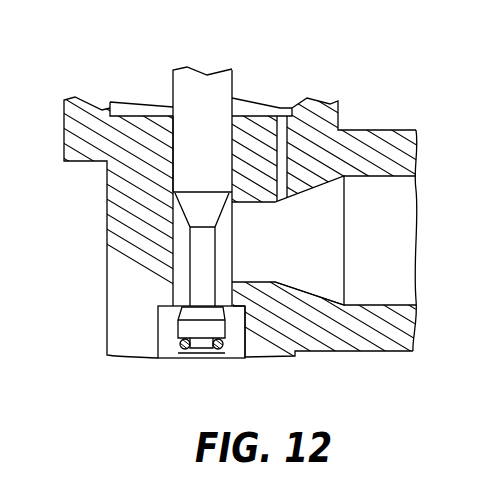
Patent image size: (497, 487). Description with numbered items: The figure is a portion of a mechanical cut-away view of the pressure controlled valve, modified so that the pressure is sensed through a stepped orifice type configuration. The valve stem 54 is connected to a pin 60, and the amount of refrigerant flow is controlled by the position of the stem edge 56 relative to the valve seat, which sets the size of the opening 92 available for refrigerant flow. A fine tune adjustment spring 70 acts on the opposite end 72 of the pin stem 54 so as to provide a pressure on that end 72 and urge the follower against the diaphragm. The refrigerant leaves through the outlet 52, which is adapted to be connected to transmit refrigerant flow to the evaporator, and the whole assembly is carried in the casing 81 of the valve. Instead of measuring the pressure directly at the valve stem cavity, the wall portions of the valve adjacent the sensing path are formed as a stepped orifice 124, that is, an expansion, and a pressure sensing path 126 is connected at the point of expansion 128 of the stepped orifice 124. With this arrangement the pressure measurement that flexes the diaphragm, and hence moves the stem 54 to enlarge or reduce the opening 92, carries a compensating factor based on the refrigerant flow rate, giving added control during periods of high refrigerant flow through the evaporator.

The pin 60 is at (199, 78).
The pressure sensing path 126 is at (281, 122).
The point of expansion 128 is at (291, 196).
The outlet 52 is at (358, 177).
The stepped orifice 124 is at (313, 294).
The valve stem 54 is at (189, 258).
The stem edge 56 is at (179, 310).
The opposite end 72 is at (183, 330).
The fine tune adjustment spring 70 is at (217, 353).
The opening 92 is at (237, 307).
The casing 81 is at (378, 352).